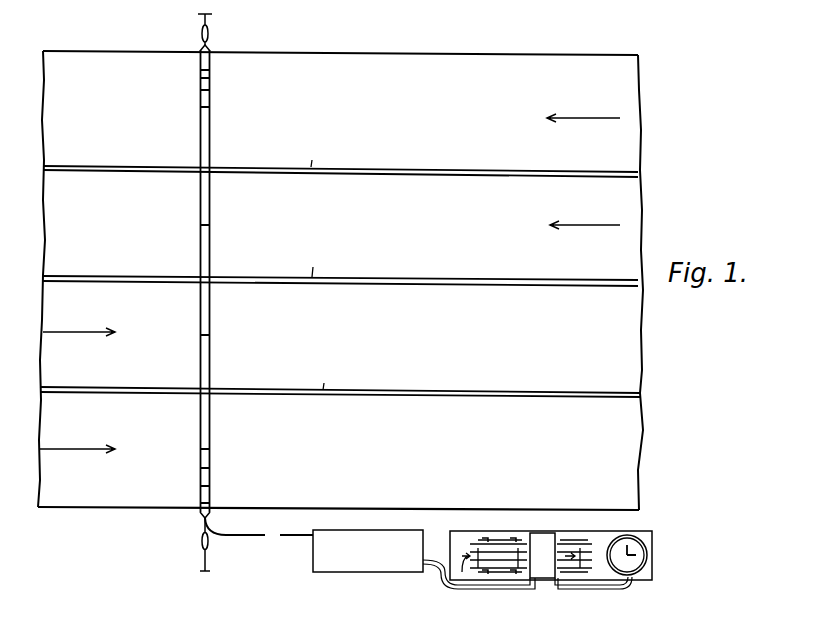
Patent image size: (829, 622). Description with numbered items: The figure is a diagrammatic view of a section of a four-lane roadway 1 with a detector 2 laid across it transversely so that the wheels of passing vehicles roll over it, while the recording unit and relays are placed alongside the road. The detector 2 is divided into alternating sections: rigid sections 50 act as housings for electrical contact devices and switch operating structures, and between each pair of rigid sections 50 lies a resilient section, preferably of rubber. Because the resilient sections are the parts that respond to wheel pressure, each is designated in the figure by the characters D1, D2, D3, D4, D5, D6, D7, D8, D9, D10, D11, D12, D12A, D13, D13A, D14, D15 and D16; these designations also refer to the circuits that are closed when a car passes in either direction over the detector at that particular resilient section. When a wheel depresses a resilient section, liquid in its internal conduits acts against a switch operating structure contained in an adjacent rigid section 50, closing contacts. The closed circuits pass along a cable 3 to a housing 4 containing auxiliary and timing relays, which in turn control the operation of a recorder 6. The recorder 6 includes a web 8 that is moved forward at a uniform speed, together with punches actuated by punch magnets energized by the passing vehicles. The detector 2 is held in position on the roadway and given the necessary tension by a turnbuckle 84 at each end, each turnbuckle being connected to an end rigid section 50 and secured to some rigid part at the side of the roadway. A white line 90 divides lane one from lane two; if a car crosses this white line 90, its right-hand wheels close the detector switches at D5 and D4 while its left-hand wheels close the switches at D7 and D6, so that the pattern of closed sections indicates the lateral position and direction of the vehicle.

The four-lane roadway 1 is at (639, 92).
The detector 2 is at (223, 130).
The cable 3 is at (249, 540).
The housing 4 is at (346, 579).
The recorder 6 is at (548, 594).
The web 8 is at (470, 556).
The rigid sections 50 is at (200, 107).
The turnbuckle 84 is at (200, 543).
The white line 90 is at (319, 267).
The resilient section D1 is at (212, 64).
The resilient section D2 is at (212, 79).
The resilient section D3 is at (212, 96).
The resilient section D4 is at (200, 146).
The resilient section D5 is at (212, 146).
The resilient section D6 is at (200, 199).
The resilient section D7 is at (231, 201).
The resilient section D8 is at (200, 249).
The resilient section D9 is at (212, 249).
The resilient section D10 is at (212, 309).
The resilient section D11 is at (200, 309).
The resilient section D12 is at (212, 360).
The resilient section D13 is at (200, 360).
The resilient section D12A is at (212, 421).
The resilient section D13A is at (200, 421).
The resilient section D14 is at (200, 461).
The resilient section D15 is at (200, 477).
The resilient section D16 is at (200, 494).